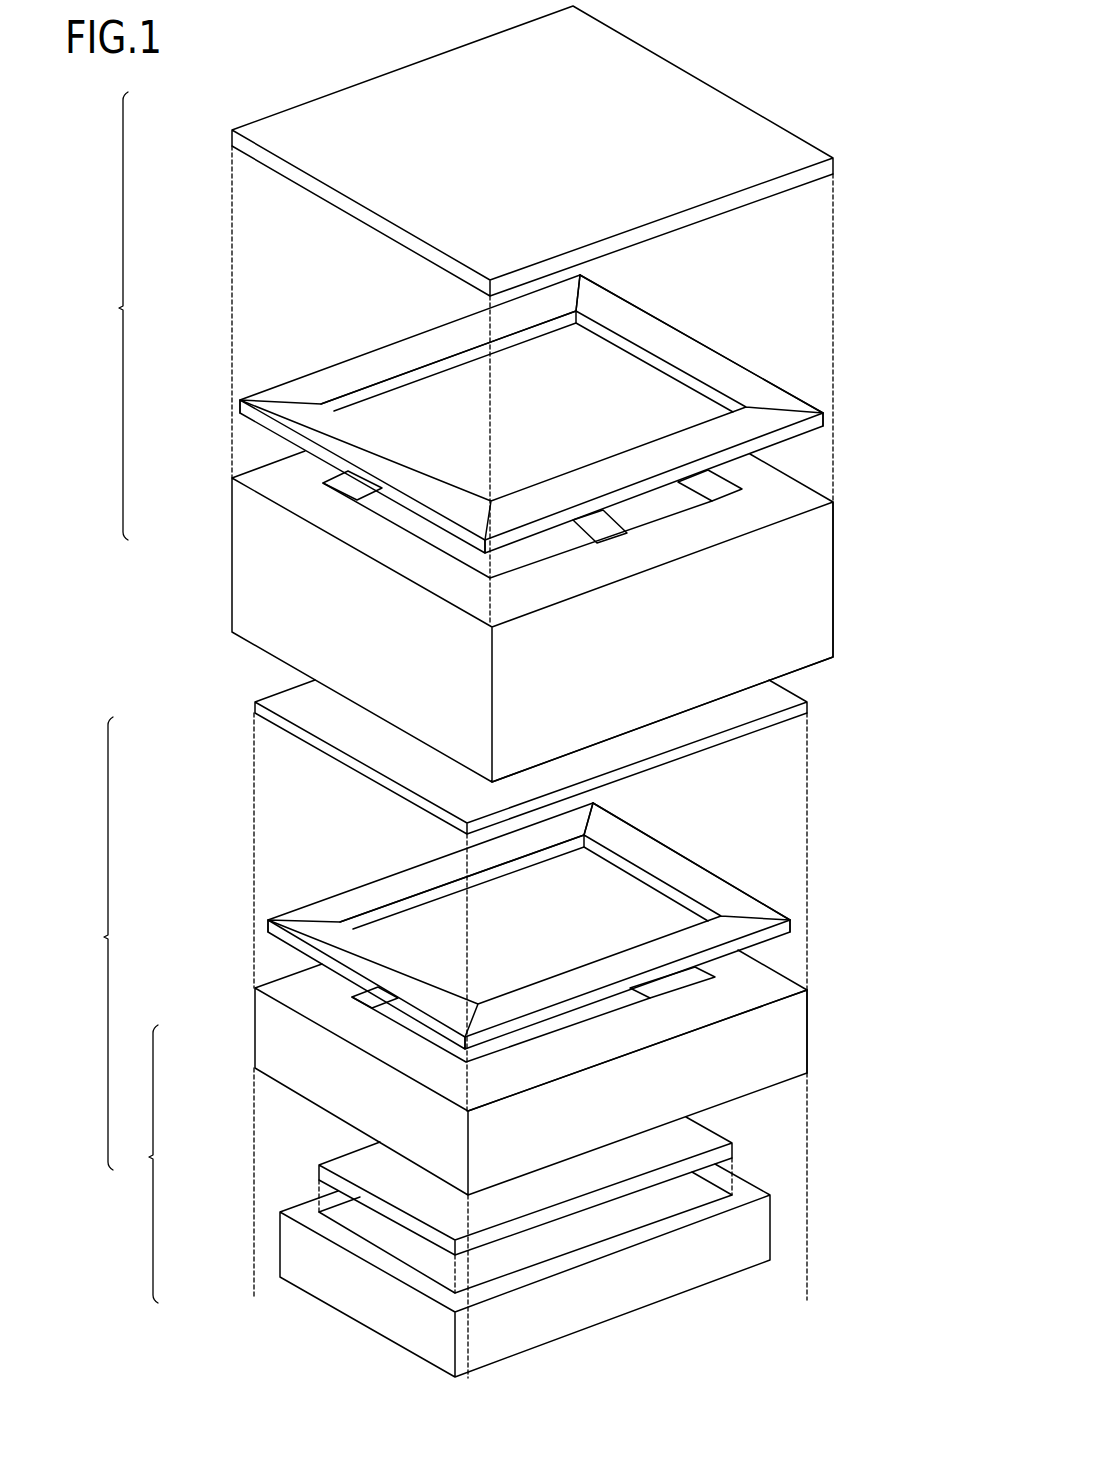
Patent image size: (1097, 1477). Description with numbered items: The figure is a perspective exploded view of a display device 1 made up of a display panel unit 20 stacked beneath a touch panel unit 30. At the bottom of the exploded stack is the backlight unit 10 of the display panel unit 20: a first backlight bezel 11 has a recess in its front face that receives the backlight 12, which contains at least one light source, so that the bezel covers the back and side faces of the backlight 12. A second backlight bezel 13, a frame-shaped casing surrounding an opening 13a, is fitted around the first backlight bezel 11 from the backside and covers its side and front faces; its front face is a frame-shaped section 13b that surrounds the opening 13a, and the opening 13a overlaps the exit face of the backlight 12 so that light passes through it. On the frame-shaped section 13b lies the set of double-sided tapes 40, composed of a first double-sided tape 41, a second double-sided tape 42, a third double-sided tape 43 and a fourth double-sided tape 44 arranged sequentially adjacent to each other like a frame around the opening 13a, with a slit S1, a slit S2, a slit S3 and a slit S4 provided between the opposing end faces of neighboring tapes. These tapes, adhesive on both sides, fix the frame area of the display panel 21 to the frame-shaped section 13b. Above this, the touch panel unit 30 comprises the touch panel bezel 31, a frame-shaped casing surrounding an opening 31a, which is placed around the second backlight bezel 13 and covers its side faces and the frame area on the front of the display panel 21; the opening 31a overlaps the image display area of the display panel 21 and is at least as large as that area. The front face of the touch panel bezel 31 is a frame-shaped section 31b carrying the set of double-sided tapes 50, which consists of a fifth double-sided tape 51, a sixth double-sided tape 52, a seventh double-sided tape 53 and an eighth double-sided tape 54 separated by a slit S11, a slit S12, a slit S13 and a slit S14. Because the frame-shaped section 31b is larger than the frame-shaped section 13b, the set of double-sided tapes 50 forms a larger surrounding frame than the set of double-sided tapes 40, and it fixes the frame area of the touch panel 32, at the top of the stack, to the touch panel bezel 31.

The display device 1 is at (816, 86).
The backlight unit 10 is at (495, 1163).
The first backlight bezel 11 is at (313, 1257).
The backlight 12 is at (370, 1158).
The second backlight bezel 13 is at (268, 1043).
The opening 13a is at (708, 975).
The frame-shaped section 13b is at (702, 1008).
The display panel unit 20 is at (479, 1028).
The display panel 21 is at (253, 712).
The touch panel unit 30 is at (510, 394).
The touch panel bezel 31 is at (255, 532).
The opening 31a is at (717, 478).
The frame-shaped section 31b is at (727, 520).
The touch panel 32 is at (267, 132).
The set of double-sided tapes 40 is at (281, 906).
The first double-sided tape 41 is at (680, 872).
The second double-sided tape 42 is at (612, 990).
The third double-sided tape 43 is at (387, 997).
The fourth double-sided tape 44 is at (514, 872).
The set of double-sided tapes 50 is at (255, 385).
The fifth double-sided tape 51 is at (678, 348).
The sixth double-sided tape 52 is at (613, 497).
The seventh double-sided tape 53 is at (385, 490).
The eighth double-sided tape 54 is at (502, 338).
The slit S1 is at (806, 914).
The slit S2 is at (455, 1045).
The slit S3 is at (250, 928).
The slit S4 is at (610, 795).
The slit S11 is at (835, 410).
The slit S12 is at (472, 553).
The slit S13 is at (232, 406).
The slit S14 is at (596, 268).